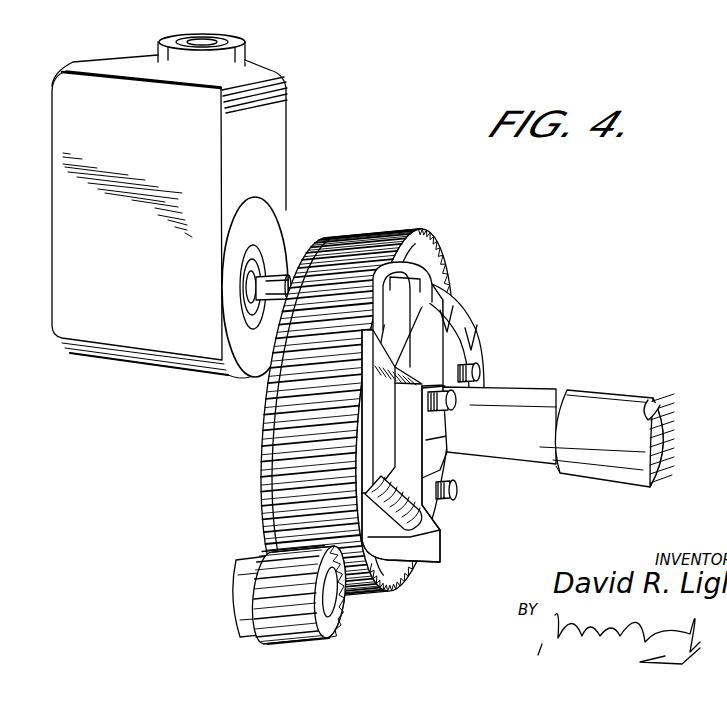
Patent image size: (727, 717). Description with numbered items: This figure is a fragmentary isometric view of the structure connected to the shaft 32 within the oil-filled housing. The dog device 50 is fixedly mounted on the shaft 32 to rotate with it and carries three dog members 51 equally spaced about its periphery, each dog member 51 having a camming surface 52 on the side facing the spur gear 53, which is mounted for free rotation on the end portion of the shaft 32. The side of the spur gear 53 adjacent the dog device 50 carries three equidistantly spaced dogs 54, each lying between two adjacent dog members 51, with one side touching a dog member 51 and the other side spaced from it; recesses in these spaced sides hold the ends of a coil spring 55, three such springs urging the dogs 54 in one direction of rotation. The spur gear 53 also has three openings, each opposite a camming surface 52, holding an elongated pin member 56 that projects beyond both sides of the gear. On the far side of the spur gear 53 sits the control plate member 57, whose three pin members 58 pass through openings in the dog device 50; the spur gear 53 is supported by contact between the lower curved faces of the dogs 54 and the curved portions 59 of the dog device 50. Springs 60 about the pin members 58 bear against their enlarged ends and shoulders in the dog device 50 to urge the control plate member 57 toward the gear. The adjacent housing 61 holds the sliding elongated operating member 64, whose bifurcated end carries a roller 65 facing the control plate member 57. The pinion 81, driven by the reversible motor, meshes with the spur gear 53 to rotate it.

The shaft 32 is at (545, 409).
The dog device 50 is at (496, 341).
The dog members 51 is at (482, 352).
The camming surface 52 is at (381, 330).
The spur gear 53 is at (375, 230).
The dogs 54 is at (467, 461).
The coil spring 55 is at (413, 529).
The pin member 56 is at (426, 335).
The control plate member 57 is at (262, 409).
The pin members 58 is at (457, 491).
The curved portions 59 is at (420, 444).
The springs 60 is at (430, 426).
The housing 61 is at (272, 122).
The elongated operating member 64 is at (253, 271).
The roller 65 is at (287, 280).
The pinion 81 is at (313, 603).